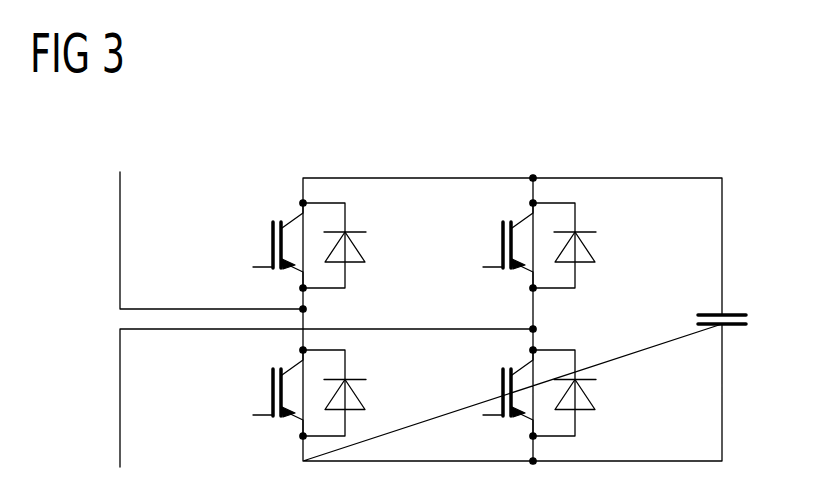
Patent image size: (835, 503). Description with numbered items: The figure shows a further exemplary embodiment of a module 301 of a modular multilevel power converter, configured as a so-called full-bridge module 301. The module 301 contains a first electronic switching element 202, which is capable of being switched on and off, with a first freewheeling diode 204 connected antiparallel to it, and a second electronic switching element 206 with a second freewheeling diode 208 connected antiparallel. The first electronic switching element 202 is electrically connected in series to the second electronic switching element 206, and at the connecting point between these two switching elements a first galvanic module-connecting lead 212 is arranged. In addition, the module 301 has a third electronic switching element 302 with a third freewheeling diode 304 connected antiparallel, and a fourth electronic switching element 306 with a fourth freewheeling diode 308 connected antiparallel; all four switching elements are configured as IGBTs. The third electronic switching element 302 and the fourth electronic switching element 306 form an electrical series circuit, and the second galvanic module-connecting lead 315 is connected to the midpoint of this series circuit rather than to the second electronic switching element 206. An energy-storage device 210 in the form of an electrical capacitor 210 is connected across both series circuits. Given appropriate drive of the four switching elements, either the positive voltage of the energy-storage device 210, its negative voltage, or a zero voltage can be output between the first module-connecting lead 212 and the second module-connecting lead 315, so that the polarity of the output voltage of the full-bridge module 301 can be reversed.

The module 301 is at (742, 132).
The first module-connecting lead 212 is at (120, 232).
The second module-connecting lead 315 is at (120, 407).
The first electronic switching element 202 is at (270, 246).
The first freewheeling diode 204 is at (366, 246).
The second electronic switching element 206 is at (270, 393).
The second freewheeling diode 208 is at (366, 393).
The third electronic switching element 302 is at (500, 246).
The third freewheeling diode 304 is at (596, 247).
The fourth electronic switching element 306 is at (500, 393).
The fourth freewheeling diode 308 is at (596, 393).
The energy-storage device 210 is at (736, 312).